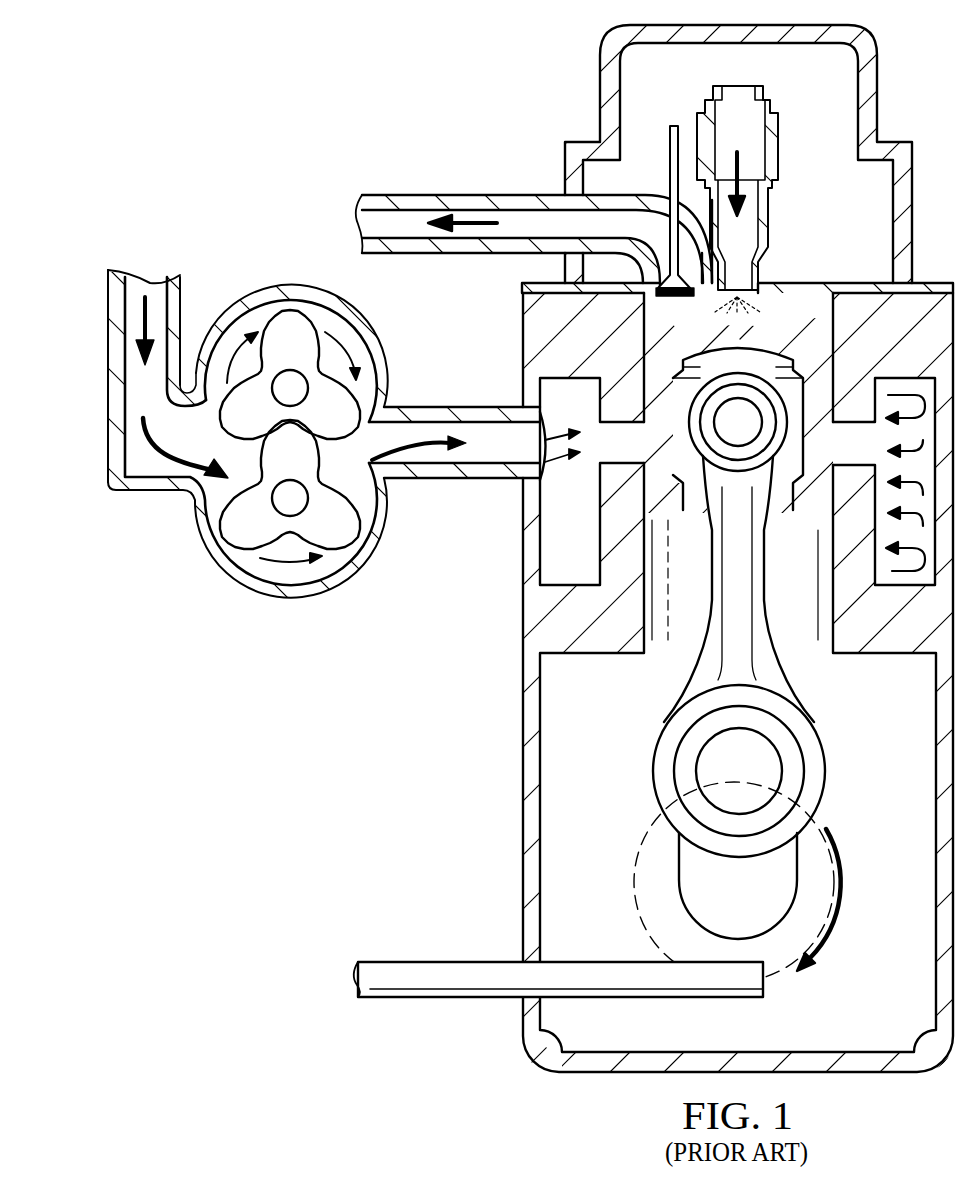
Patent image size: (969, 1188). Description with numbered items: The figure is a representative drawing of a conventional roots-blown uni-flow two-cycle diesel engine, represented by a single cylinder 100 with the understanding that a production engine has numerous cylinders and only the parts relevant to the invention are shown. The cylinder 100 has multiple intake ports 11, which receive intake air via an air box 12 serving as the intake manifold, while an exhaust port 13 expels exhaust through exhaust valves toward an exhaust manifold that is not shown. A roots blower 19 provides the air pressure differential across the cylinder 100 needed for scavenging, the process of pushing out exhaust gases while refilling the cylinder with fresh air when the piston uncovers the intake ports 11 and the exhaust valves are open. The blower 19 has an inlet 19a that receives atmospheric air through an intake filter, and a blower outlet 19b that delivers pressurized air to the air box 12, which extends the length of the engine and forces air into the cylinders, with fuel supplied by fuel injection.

The cylinder 100 is at (484, 594).
The intake ports 11 is at (556, 397).
The air box 12 is at (433, 395).
The exhaust port 13 is at (672, 138).
The roots blower 19 is at (268, 278).
The inlet 19a is at (117, 350).
The blower outlet 19b is at (475, 468).